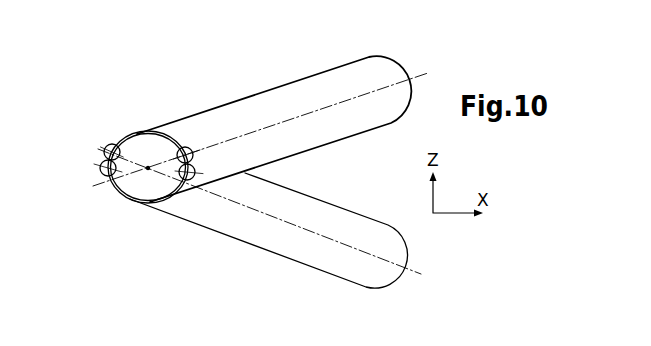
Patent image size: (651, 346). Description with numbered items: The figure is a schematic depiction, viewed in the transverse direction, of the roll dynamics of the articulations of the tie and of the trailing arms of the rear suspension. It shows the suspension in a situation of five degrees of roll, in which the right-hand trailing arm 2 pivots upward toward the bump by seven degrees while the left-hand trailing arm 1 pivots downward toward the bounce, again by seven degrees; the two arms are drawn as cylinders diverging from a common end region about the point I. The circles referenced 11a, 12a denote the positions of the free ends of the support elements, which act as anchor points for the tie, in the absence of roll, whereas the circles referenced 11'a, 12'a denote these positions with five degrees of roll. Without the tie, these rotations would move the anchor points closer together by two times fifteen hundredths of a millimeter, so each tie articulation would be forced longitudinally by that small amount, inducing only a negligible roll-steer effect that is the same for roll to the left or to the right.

The left-hand trailing arm 1 is at (352, 213).
The right-hand trailing arm 2 is at (265, 92).
The position of the free end of the support element in the absence of roll 11a is at (101, 168).
The position of the free end of the support element with roll 11'a is at (94, 128).
The position of the free end of the support element in the absence of roll 12a is at (191, 178).
The position of the free end of the support element with roll 12'a is at (175, 118).
The intersection point of axes I is at (148, 168).